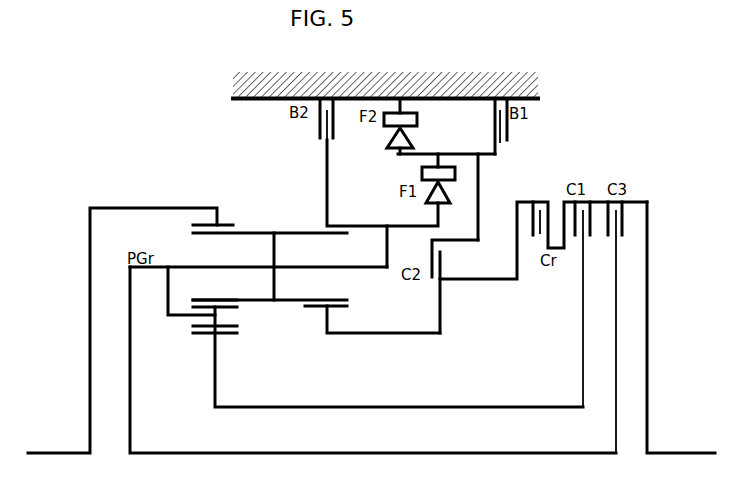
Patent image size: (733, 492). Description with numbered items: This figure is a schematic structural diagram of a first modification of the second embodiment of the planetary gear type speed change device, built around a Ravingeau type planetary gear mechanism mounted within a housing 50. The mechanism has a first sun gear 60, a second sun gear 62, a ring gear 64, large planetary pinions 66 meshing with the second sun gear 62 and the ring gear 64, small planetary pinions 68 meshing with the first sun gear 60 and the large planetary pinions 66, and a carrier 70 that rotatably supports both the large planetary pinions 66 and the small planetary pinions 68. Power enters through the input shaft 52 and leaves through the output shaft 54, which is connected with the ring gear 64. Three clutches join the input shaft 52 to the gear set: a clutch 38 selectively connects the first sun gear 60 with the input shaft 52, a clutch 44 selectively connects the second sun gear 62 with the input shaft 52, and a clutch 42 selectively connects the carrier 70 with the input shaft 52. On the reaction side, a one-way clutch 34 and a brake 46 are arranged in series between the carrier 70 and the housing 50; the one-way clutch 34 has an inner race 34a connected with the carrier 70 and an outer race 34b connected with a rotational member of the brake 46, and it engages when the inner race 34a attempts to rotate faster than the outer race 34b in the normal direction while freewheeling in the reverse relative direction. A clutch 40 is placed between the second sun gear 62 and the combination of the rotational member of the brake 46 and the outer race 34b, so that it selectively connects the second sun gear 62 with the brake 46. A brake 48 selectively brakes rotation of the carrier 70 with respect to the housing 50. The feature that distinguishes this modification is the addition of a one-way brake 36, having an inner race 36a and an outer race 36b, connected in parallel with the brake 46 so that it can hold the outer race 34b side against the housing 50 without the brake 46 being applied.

The housing 50 is at (530, 85).
The brake 48 is at (316, 118).
The brake 46 is at (508, 125).
The one-way brake 36 is at (409, 140).
The inner race 36a is at (414, 137).
The outer race 36b is at (419, 118).
The one-way clutch 34 is at (479, 197).
The inner race 34a is at (477, 216).
The outer race 34b is at (456, 173).
The clutch 40 is at (441, 257).
The clutch 44 is at (536, 231).
The clutch 38 is at (586, 220).
The clutch 42 is at (623, 224).
The ring gear 64 is at (209, 223).
The large planetary pinions 66 is at (255, 232).
The carrier 70 is at (180, 267).
The small planetary pinions 68 is at (236, 300).
The second sun gear 62 is at (346, 306).
The first sun gear 60 is at (225, 334).
The output shaft 54 is at (44, 452).
The input shaft 52 is at (686, 452).